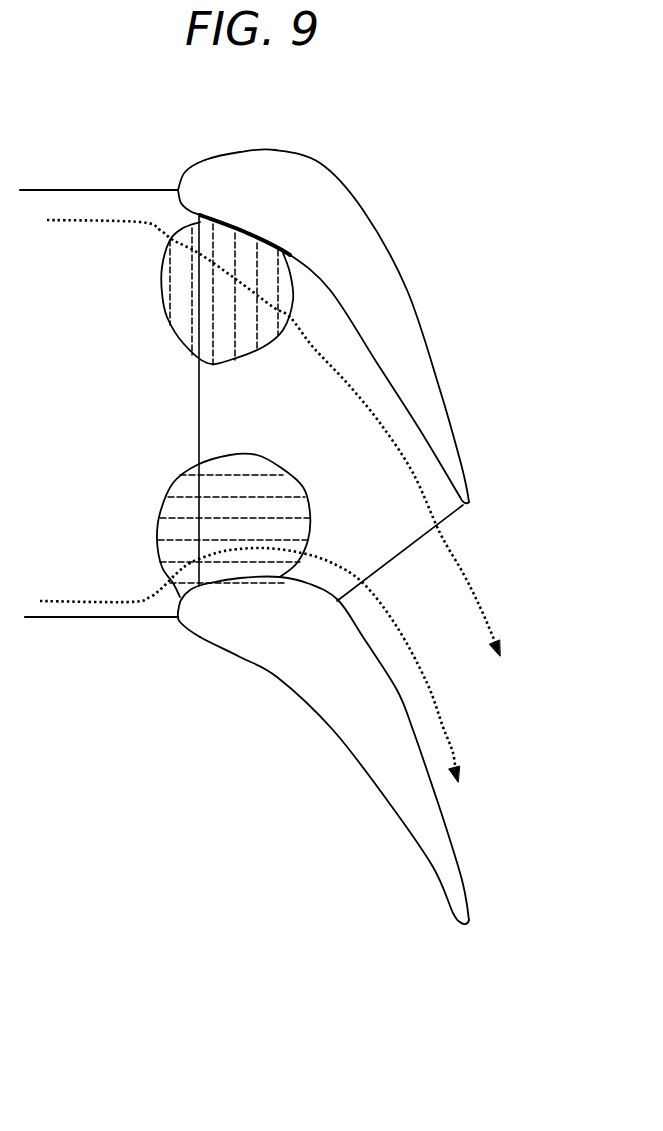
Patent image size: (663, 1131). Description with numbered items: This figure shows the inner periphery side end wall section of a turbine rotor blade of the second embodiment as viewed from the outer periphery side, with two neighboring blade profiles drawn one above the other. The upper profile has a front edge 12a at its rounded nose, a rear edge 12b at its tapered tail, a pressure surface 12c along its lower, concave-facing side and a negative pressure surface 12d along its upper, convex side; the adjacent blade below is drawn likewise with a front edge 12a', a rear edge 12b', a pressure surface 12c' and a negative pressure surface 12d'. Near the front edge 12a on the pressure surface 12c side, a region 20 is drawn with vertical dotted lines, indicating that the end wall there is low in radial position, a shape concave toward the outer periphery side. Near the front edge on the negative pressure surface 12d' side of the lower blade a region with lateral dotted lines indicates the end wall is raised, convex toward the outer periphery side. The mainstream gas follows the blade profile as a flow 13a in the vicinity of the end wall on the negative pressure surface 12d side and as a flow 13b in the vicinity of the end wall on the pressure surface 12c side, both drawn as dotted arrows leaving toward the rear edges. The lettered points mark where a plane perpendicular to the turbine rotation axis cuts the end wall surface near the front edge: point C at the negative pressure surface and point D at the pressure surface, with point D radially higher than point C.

The front edge 12a is at (112, 187).
The rear edge 12b is at (420, 549).
The pressure surface 12c is at (330, 341).
The negative pressure surface 12d is at (337, 303).
The region (sectioned area) 20 is at (222, 405).
The flow 13a is at (269, 665).
The flow 13b is at (284, 438).
The intersection point C is at (173, 225).
The intersection point D is at (184, 587).
The front edge 12a' is at (115, 615).
The rear edge 12b' is at (483, 938).
The pressure surface 12c' is at (330, 779).
The negative pressure surface 12d' is at (337, 748).